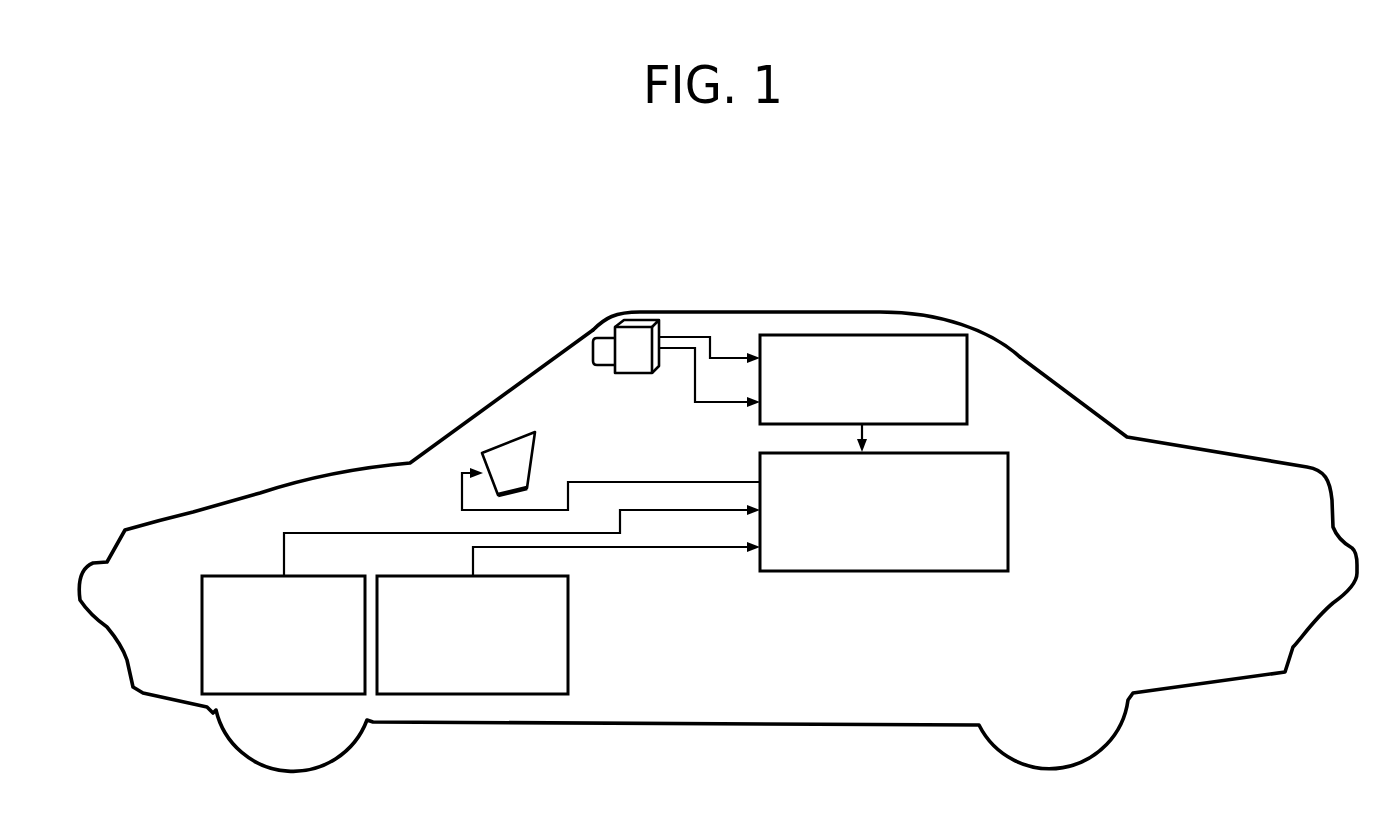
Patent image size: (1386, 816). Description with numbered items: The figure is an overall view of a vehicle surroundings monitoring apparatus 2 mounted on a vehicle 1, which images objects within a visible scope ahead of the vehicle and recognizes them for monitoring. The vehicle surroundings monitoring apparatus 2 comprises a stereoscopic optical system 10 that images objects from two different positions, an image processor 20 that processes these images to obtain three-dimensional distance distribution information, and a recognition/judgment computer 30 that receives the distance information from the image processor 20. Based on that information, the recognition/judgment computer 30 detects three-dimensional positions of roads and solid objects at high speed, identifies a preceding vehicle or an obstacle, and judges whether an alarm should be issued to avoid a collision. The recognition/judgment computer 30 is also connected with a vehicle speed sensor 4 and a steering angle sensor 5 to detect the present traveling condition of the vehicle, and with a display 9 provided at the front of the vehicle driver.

The vehicle 1 is at (1023, 360).
The vehicle surroundings monitoring apparatus 2 is at (723, 309).
The stereoscopic optical system 10 is at (642, 311).
The image processor 20 is at (872, 335).
The recognition/judgment computer 30 is at (947, 572).
The display 9 is at (505, 437).
The vehicle speed sensor 4 is at (200, 632).
The steering angle sensor 5 is at (568, 630).